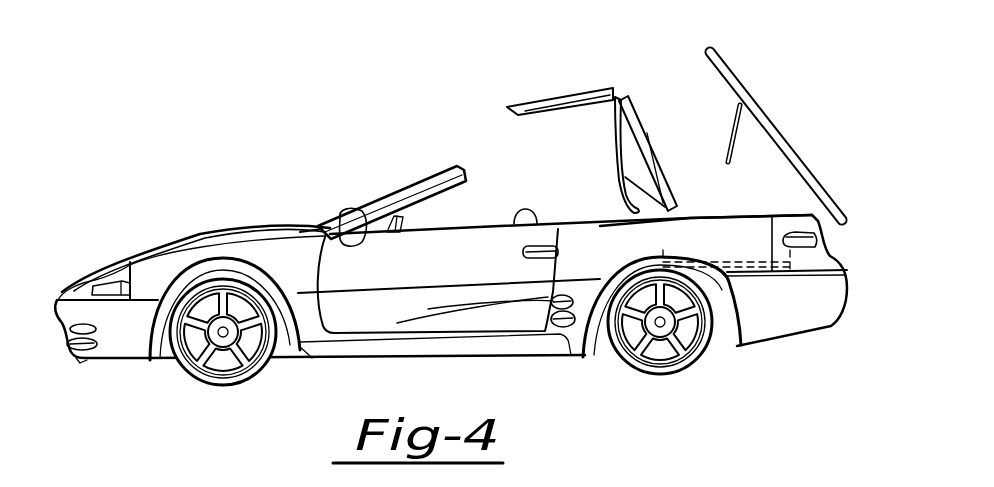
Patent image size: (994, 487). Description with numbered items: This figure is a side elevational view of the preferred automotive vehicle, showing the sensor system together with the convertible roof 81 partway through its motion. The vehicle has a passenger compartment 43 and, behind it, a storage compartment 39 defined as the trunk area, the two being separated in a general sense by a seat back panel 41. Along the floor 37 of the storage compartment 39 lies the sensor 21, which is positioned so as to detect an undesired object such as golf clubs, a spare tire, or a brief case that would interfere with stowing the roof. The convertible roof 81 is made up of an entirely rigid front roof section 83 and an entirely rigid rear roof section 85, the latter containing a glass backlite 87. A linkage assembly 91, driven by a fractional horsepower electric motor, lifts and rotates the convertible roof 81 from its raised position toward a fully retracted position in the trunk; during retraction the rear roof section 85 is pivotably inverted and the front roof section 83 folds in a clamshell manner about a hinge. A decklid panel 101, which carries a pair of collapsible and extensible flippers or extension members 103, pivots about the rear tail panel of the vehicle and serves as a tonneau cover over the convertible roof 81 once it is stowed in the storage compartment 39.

The sensor 21 is at (738, 255).
The floor 37 is at (833, 317).
The storage compartment 39 is at (690, 217).
The seat back panel 41 is at (660, 260).
The passenger compartment 43 is at (462, 222).
The convertible roof 81 is at (569, 106).
The front roof section 83 is at (530, 100).
The rear roof section 85 is at (621, 118).
The glass backlite 87 is at (657, 140).
The linkage assembly 91 is at (610, 181).
The decklid panel 101 is at (768, 123).
The extension members 103 is at (740, 133).